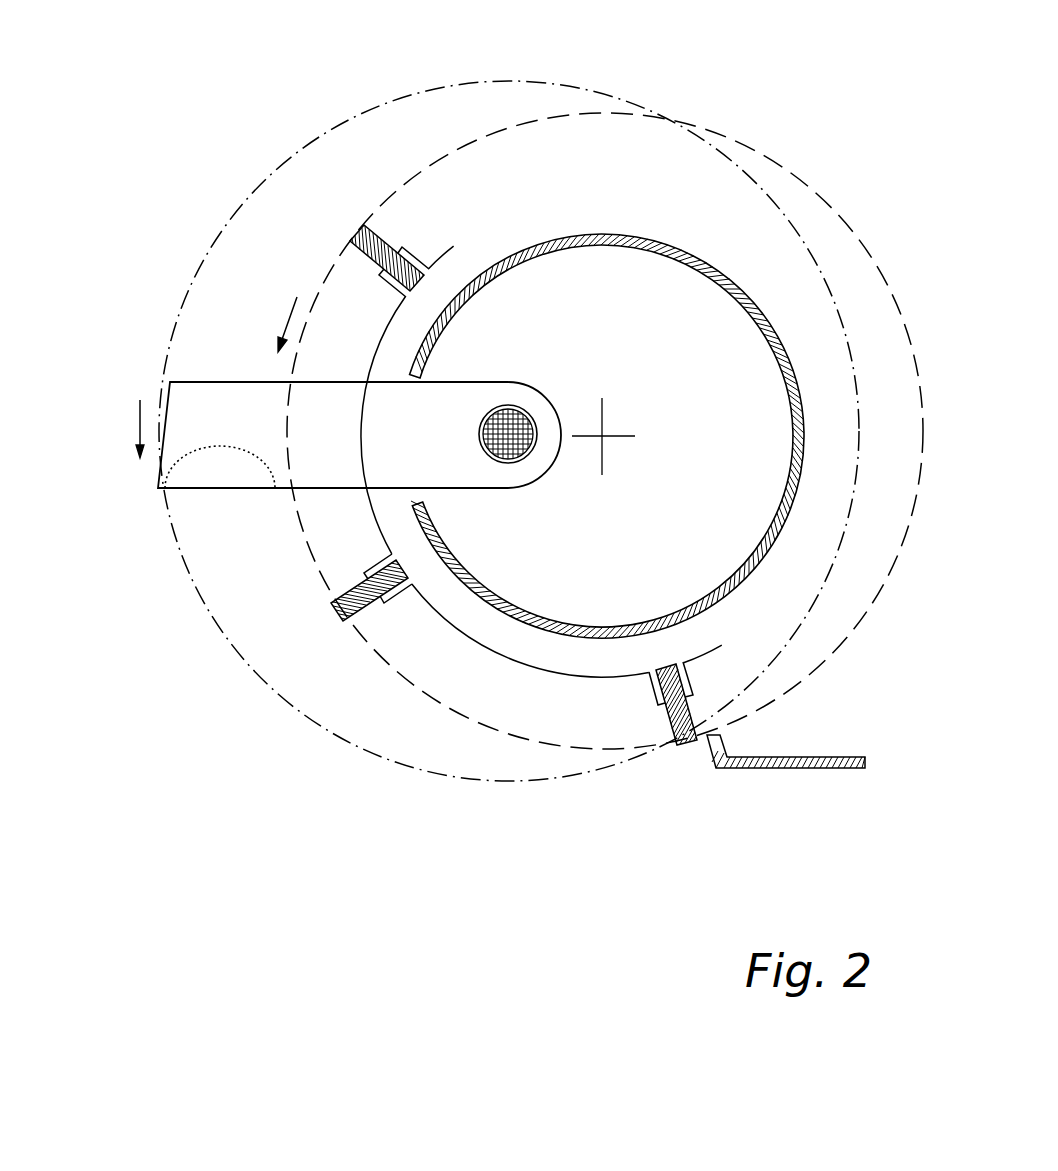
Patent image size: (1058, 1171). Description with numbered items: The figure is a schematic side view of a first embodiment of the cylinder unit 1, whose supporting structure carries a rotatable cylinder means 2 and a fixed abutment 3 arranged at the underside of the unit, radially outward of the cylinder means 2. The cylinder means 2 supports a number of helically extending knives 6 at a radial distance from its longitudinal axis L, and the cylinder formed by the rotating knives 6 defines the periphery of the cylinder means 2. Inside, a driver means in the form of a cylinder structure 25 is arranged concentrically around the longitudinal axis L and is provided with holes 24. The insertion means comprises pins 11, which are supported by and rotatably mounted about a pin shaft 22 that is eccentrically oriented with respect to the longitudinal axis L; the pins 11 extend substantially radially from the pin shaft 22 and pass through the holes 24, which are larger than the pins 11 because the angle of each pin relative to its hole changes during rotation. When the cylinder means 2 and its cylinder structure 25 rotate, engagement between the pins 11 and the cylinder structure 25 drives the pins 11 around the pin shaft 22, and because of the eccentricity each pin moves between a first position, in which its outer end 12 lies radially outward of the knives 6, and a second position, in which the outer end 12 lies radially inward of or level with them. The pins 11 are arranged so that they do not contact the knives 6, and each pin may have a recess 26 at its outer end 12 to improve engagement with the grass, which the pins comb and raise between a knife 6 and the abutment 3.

The cylinder unit 1 is at (316, 120).
The cylinder means 2 is at (838, 180).
The abutment 3 is at (793, 770).
The knives 6 is at (350, 620).
The pins 11 is at (283, 427).
The outer end of the pin 12 is at (165, 433).
The pin shaft 22 is at (505, 458).
The holes 24 is at (410, 493).
The cylinder structure (driver means) 25 is at (541, 238).
The recess 26 is at (185, 460).
The longitudinal axis L is at (602, 437).